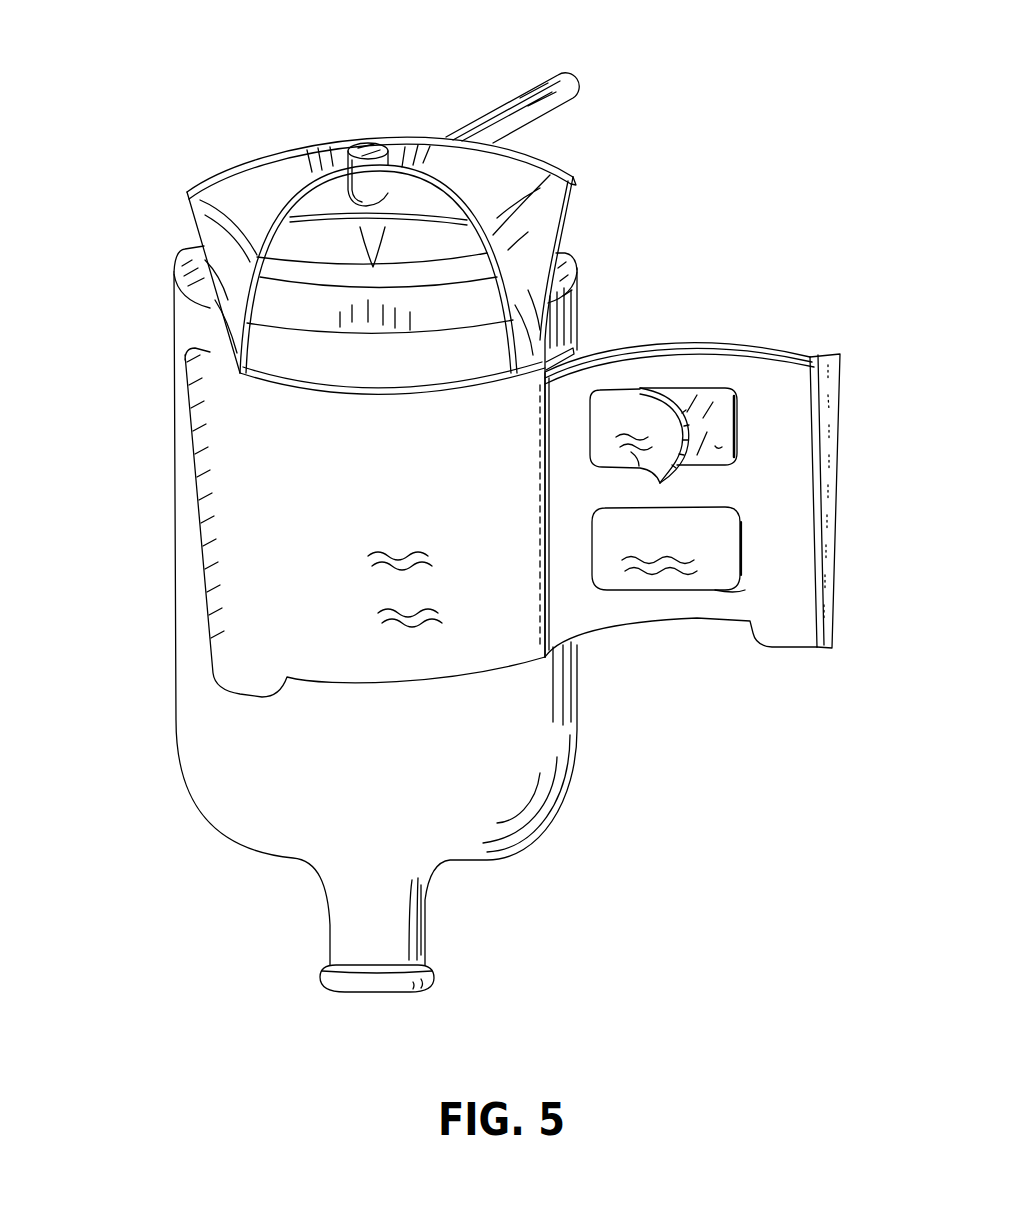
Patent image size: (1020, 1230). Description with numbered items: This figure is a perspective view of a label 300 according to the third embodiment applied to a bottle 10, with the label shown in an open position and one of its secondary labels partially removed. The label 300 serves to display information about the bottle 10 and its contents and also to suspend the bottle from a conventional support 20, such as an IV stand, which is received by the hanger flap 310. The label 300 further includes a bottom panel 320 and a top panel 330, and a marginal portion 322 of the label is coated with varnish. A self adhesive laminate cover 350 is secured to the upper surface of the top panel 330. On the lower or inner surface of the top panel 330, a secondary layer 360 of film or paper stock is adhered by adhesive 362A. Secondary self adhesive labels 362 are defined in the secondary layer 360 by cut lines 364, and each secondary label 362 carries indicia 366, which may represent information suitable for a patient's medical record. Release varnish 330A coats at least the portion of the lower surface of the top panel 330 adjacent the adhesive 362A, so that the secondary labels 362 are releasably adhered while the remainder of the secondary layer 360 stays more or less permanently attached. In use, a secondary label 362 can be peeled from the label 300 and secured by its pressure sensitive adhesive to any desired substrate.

The bottle 10 is at (392, 867).
The support 20 is at (555, 85).
The label 300 is at (656, 748).
The hanger flap 310 is at (163, 236).
The bottom panel 320 is at (394, 697).
The marginal portion 322 is at (190, 373).
The top panel 330 is at (760, 348).
The release varnish 330A is at (728, 450).
The self adhesive laminate cover 350 is at (803, 350).
The secondary layer 360 is at (713, 350).
The secondary self adhesive labels 362 is at (607, 405).
The adhesive 362A is at (698, 402).
The cut lines 364 is at (742, 413).
The indicia 366 is at (600, 566).